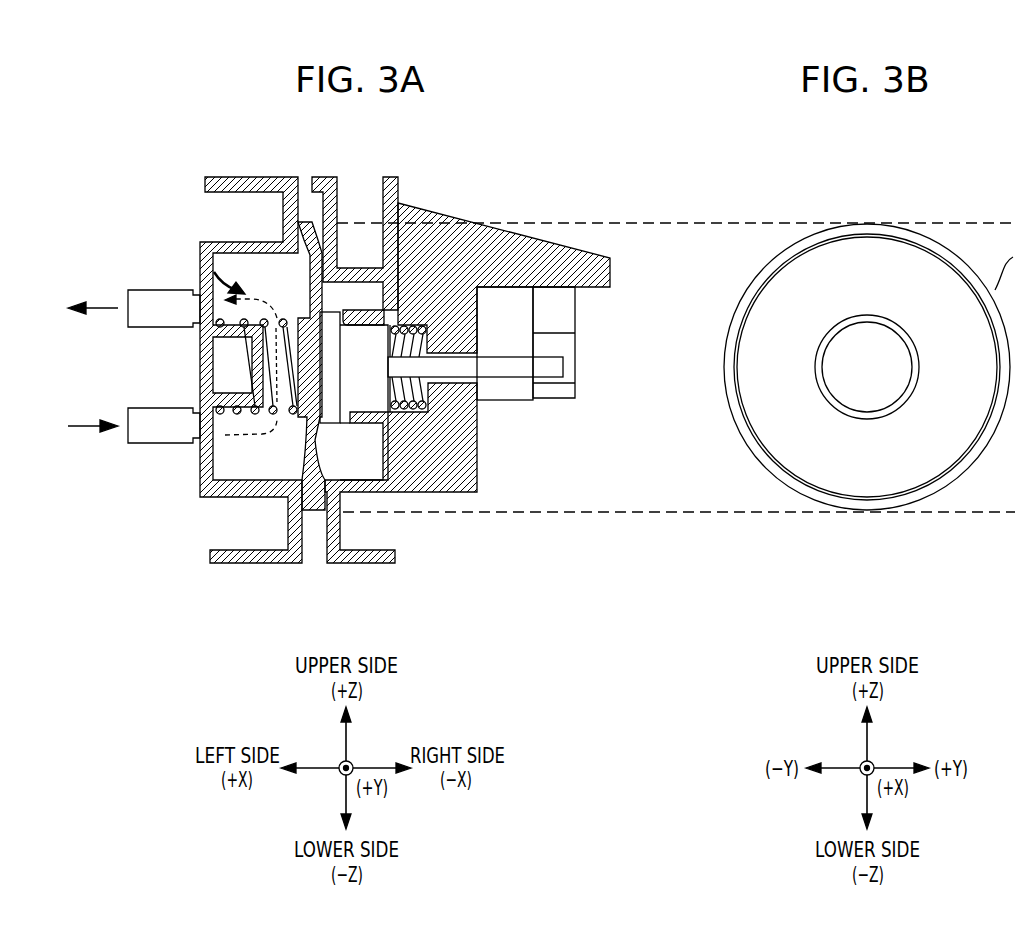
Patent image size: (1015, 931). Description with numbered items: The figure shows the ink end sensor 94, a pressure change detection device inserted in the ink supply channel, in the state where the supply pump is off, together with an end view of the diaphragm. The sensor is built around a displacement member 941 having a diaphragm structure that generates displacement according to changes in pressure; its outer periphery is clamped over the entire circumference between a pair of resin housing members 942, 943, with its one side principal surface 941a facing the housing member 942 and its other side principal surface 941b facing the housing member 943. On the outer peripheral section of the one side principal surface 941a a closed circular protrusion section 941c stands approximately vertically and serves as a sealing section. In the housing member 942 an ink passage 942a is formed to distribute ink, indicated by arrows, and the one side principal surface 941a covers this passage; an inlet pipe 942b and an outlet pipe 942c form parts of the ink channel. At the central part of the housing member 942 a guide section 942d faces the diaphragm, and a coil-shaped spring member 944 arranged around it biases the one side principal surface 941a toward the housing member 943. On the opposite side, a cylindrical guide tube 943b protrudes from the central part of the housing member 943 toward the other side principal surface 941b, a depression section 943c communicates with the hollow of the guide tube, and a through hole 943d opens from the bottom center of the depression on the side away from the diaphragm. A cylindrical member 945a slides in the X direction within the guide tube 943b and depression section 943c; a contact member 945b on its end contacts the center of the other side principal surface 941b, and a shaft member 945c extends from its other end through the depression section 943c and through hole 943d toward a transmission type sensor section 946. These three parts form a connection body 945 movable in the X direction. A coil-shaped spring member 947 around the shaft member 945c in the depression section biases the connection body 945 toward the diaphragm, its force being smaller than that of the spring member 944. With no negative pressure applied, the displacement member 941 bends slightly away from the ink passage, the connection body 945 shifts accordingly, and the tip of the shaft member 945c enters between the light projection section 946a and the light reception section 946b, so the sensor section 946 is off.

In FIG. 3A, the ink end sensor 94 is at (204, 139).
In FIG. 3A, the displacement member 941 is at (310, 220).
In FIG. 3A, the one side principal surface 941a is at (307, 260).
In FIG. 3B, the one side principal surface 941a is at (862, 253).
In FIG. 3A, the other side principal surface 941b is at (320, 463).
In FIG. 3B, the circular protrusion section 941c is at (743, 437).
In FIG. 3A, the housing member 942 is at (250, 565).
In FIG. 3A, the ink passage 942a is at (214, 272).
In FIG. 3A, the inlet pipe 942b is at (146, 433).
In FIG. 3A, the outlet pipe 942c is at (147, 318).
In FIG. 3A, the guide section 942d is at (252, 380).
In FIG. 3A, the housing member 943 is at (356, 565).
In FIG. 3A, the guide tube 943b is at (368, 316).
In FIG. 3A, the depression section 943c is at (398, 206).
In FIG. 3A, the through hole 943d is at (470, 357).
In FIG. 3A, the spring member 944 is at (238, 413).
In FIG. 3A, the connection body 945 is at (630, 591).
In FIG. 3A, the cylindrical member 945a is at (375, 405).
In FIG. 3A, the contact member 945b is at (335, 430).
In FIG. 3A, the shaft member 945c is at (512, 375).
In FIG. 3A, the transmission type sensor section 946 is at (652, 331).
In FIG. 3A, the light projection section 946a is at (566, 343).
In FIG. 3A, the light reception section 946b is at (566, 390).
In FIG. 3A, the spring member 947 is at (395, 398).